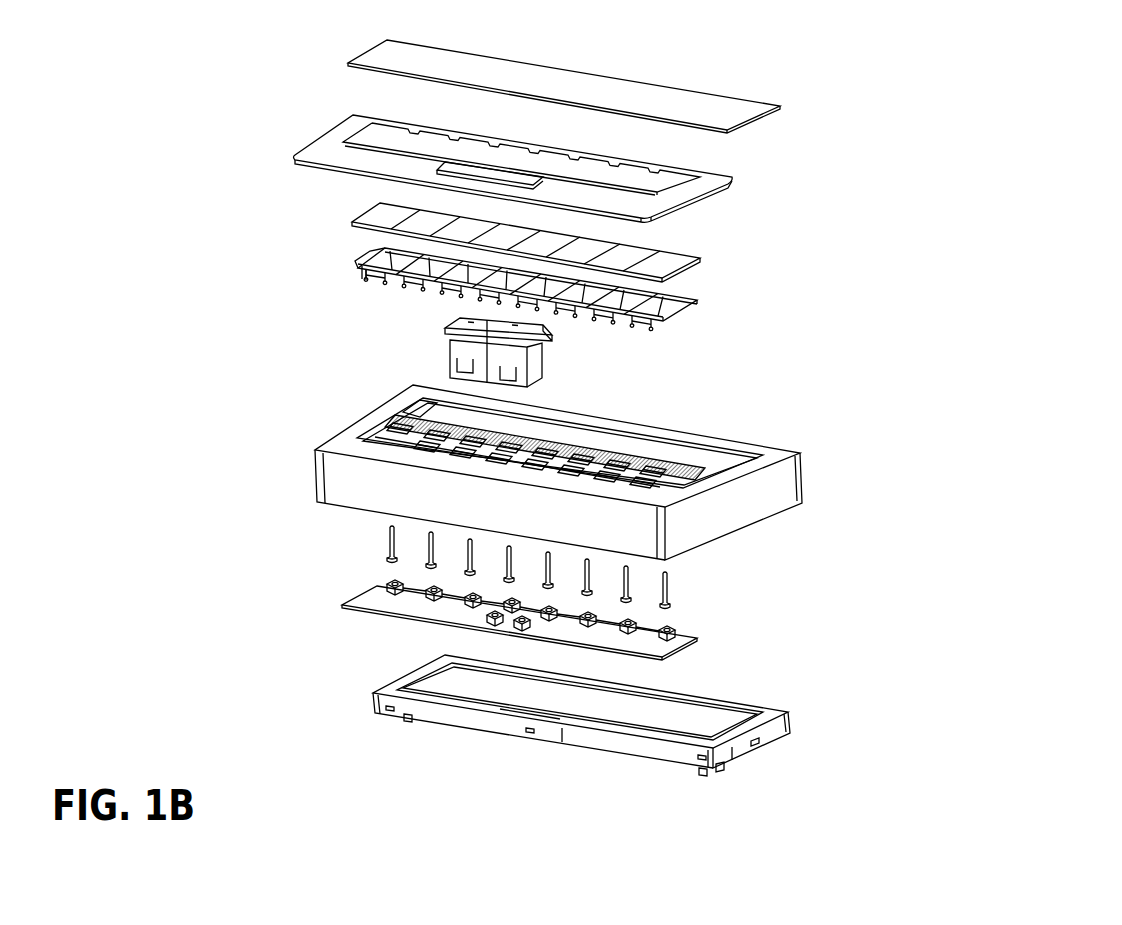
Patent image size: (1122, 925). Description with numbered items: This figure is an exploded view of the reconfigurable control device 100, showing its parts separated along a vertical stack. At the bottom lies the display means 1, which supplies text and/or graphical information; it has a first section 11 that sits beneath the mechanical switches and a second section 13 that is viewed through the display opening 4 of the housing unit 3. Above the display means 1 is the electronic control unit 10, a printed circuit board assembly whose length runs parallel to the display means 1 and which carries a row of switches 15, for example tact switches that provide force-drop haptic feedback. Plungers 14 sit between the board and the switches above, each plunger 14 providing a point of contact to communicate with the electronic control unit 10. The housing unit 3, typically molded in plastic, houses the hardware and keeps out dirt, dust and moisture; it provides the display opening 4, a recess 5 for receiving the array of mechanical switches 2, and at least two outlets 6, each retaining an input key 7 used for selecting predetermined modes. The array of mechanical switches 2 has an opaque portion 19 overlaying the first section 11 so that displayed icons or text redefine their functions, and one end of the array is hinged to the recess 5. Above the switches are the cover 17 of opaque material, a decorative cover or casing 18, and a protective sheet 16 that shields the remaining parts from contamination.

The reconfigurable control device 100 is at (922, 339).
The display means 1 is at (774, 757).
The array of mechanical switches 2 is at (360, 265).
The housing unit 3 is at (783, 497).
The display opening 4 is at (699, 453).
The recess 5 is at (603, 467).
The outlets 6 is at (487, 473).
The input key 7 is at (431, 350).
The electronic control unit 10 is at (441, 608).
The first section 11 is at (540, 704).
The second section 13 is at (634, 705).
The plunger 14 is at (685, 590).
The row of switches 15 is at (380, 587).
The protective sheet 16 is at (652, 98).
The cover 17 is at (653, 270).
The decorative cover or casing 18 is at (683, 193).
The opaque portion 19 is at (677, 308).